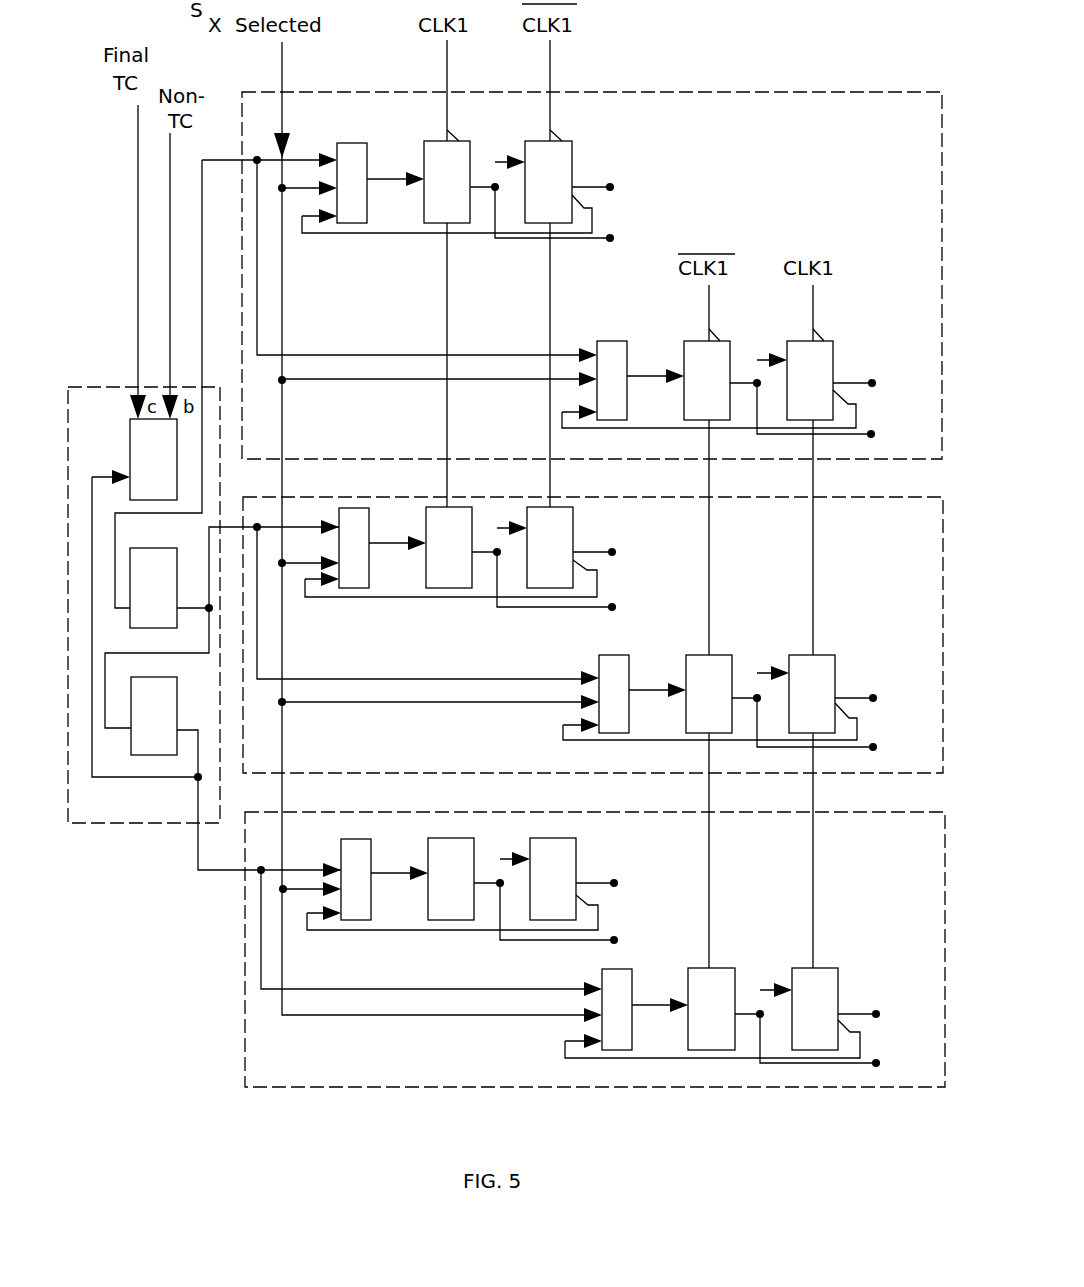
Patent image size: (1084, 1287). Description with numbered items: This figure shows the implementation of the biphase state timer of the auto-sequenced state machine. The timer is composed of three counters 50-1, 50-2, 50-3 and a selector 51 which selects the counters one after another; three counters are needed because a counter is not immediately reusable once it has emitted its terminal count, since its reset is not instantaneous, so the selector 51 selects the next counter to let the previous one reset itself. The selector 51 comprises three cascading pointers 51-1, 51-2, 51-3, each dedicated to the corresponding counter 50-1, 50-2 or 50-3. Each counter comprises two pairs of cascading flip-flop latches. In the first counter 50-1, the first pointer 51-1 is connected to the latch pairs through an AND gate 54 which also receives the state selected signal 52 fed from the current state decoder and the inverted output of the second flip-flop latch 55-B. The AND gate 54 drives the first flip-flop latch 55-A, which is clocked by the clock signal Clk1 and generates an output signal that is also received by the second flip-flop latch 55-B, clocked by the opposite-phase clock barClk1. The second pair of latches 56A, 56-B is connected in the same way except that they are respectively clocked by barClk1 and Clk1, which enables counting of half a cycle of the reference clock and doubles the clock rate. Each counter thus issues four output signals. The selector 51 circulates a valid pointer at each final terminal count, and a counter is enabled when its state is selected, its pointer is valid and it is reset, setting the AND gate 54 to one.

The first counter 50-1 is at (681, 90).
The second counter 50-2 is at (937, 496).
The third counter 50-3 is at (920, 810).
The selector 51 is at (146, 824).
The first pointer 51-1 is at (128, 450).
The second pointer 51-2 is at (178, 556).
The third pointer 51-3 is at (178, 708).
The state selected signal 52 is at (280, 74).
The AND gate 54 is at (356, 143).
The first flip-flop latch 55-A is at (423, 217).
The second flip-flop latch 55-B is at (574, 151).
The first flip-flop latch of second pair 56A is at (731, 350).
The second flip-flop latch of second pair 56-B is at (834, 350).